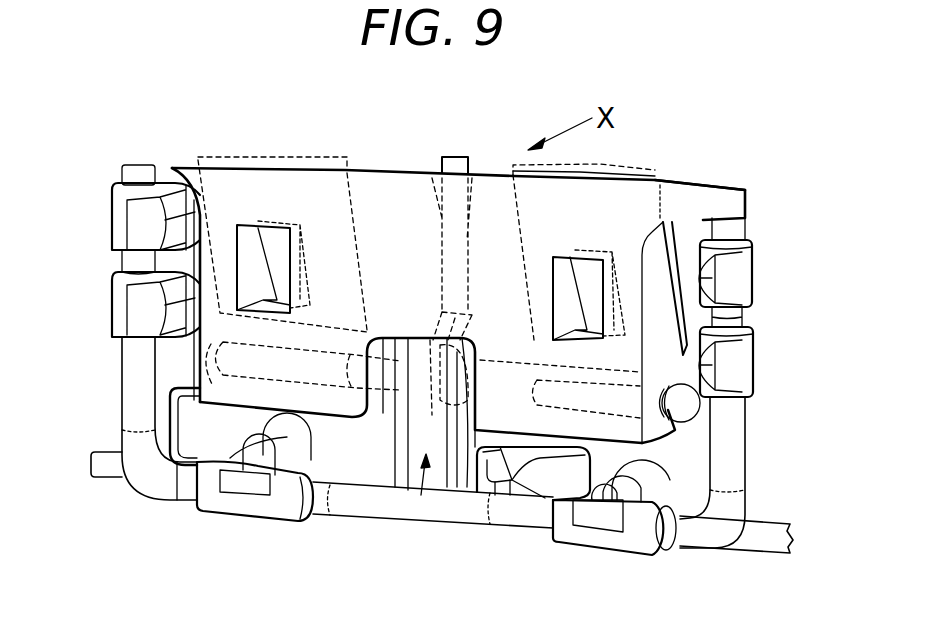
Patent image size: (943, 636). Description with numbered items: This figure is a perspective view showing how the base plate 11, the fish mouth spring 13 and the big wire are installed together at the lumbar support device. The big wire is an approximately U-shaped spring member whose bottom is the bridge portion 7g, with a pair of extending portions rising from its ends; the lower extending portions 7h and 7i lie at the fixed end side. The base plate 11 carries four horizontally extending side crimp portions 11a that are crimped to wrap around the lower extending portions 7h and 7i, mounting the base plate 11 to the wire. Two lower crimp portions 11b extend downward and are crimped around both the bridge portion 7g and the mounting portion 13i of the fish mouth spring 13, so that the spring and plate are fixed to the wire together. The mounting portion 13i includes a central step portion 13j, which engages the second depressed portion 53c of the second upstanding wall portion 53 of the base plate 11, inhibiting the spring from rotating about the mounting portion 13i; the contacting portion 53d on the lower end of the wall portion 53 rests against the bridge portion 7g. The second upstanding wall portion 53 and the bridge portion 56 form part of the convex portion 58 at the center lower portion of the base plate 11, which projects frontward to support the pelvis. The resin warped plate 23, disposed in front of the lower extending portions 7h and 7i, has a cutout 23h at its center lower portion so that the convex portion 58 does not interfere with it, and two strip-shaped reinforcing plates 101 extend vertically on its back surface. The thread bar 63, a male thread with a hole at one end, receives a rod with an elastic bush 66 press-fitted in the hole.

The reinforcing plate 101 is at (243, 168).
The warped plate 23 is at (360, 170).
The thread bar 63 is at (432, 178).
The elastic bush 66 is at (471, 153).
The base plate 11 is at (675, 228).
The side crimp portion 11a is at (122, 208).
The lower extending portion 7h is at (122, 366).
The fish mouth spring 13 is at (125, 480).
The lower crimp portion 11b is at (253, 506).
The bridge portion 7g is at (360, 512).
The mounting portion 13i is at (752, 517).
The lower extending portion 7i is at (737, 428).
The bridge portion 56 is at (414, 480).
The convex portion 58 is at (428, 483).
The cutout 23h is at (467, 490).
The second upstanding wall portion 53 is at (509, 536).
The second depressed portion 53c is at (467, 452).
The contacting portion 53d is at (490, 492).
The step portion 13j is at (500, 465).